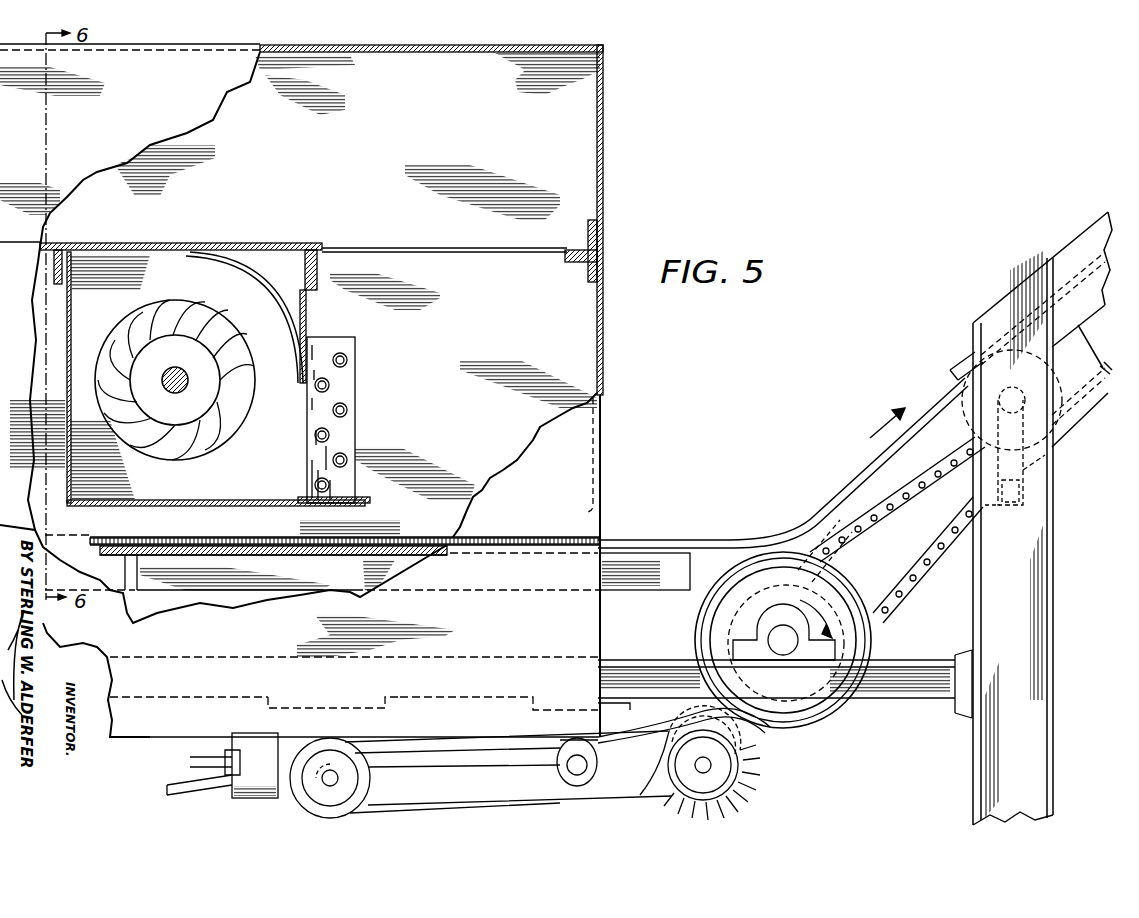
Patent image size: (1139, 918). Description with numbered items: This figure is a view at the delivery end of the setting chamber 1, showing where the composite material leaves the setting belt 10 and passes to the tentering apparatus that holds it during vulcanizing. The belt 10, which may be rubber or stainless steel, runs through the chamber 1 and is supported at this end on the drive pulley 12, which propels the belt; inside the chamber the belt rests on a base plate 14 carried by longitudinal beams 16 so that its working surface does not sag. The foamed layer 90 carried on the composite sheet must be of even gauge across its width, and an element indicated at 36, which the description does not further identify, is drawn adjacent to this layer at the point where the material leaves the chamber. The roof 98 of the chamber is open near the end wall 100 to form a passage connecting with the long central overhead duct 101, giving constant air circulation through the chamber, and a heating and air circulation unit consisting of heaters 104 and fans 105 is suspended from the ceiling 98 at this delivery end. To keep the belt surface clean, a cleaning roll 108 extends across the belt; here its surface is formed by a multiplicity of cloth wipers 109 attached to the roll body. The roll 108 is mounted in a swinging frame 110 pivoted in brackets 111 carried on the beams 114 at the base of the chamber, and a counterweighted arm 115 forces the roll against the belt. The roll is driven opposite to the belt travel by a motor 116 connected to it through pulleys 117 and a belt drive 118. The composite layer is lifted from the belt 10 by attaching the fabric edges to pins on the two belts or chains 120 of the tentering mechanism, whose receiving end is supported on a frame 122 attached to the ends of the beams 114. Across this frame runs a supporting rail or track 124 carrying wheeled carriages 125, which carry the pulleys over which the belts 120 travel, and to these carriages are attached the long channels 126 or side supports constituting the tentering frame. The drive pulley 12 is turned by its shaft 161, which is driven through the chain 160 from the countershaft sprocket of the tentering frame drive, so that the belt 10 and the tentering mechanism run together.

The setting chamber 1 is at (324, 381).
The setting belt 10 is at (522, 668).
The drive pulley 12 is at (704, 623).
The base plate 14 is at (348, 553).
The longitudinal beams 16 is at (689, 584).
The conveyor chute 36 is at (790, 450).
The foamed layer 90 is at (805, 500).
The roof 98 is at (270, 244).
The end wall 100 is at (606, 326).
The overhead duct 101 is at (374, 64).
The heaters 104 is at (357, 402).
The fans 105 is at (255, 406).
The cleaning roll 108 is at (735, 766).
The cloth wipers 109 is at (748, 742).
The swinging frame 110 is at (642, 796).
The brackets 111 is at (566, 778).
The beams 114 is at (898, 668).
The counterweighted arm 115 is at (490, 772).
The motor 116 is at (372, 782).
The pulleys 117 is at (318, 792).
The belt drive 118 is at (548, 805).
The tentering belts or chains 120 is at (1102, 322).
The frame 122 is at (1054, 592).
The supporting rail or track 124 is at (1048, 502).
The wheeled carriages 125 is at (1048, 478).
The channels 126 is at (1096, 410).
The chain 160 is at (917, 472).
The shaft 161 is at (782, 632).